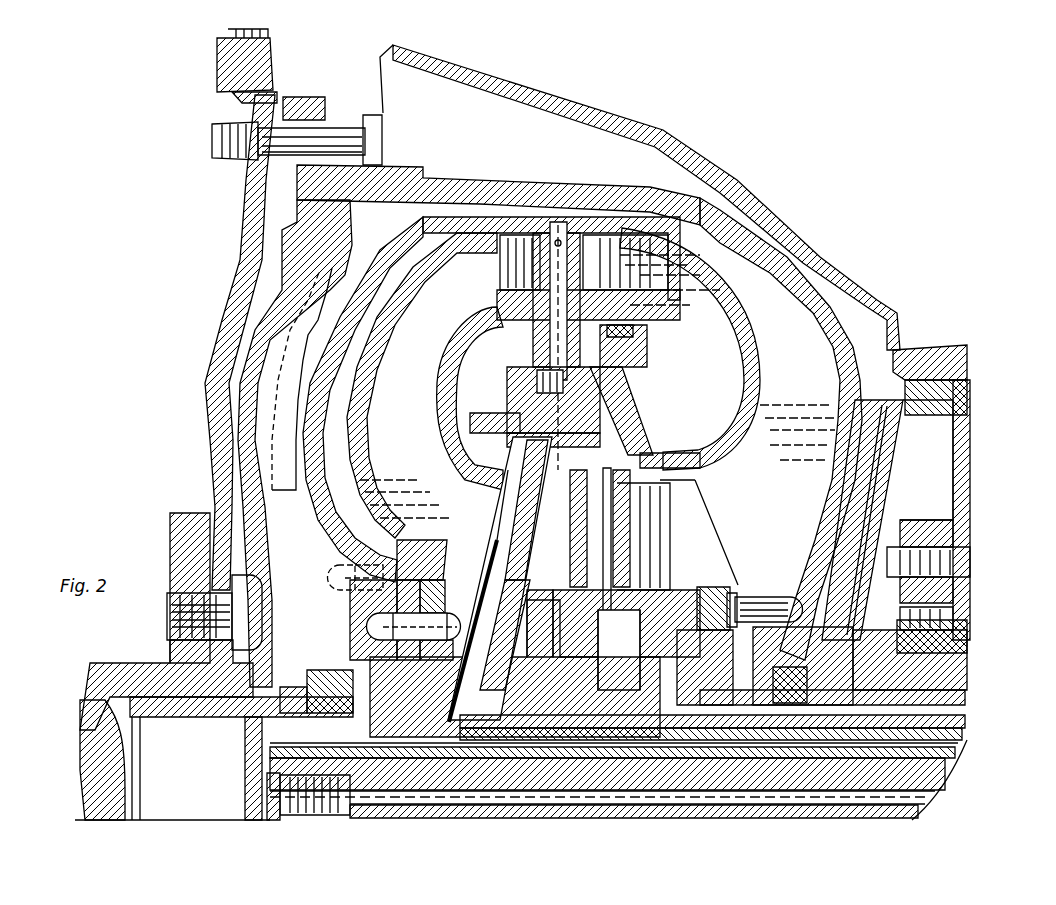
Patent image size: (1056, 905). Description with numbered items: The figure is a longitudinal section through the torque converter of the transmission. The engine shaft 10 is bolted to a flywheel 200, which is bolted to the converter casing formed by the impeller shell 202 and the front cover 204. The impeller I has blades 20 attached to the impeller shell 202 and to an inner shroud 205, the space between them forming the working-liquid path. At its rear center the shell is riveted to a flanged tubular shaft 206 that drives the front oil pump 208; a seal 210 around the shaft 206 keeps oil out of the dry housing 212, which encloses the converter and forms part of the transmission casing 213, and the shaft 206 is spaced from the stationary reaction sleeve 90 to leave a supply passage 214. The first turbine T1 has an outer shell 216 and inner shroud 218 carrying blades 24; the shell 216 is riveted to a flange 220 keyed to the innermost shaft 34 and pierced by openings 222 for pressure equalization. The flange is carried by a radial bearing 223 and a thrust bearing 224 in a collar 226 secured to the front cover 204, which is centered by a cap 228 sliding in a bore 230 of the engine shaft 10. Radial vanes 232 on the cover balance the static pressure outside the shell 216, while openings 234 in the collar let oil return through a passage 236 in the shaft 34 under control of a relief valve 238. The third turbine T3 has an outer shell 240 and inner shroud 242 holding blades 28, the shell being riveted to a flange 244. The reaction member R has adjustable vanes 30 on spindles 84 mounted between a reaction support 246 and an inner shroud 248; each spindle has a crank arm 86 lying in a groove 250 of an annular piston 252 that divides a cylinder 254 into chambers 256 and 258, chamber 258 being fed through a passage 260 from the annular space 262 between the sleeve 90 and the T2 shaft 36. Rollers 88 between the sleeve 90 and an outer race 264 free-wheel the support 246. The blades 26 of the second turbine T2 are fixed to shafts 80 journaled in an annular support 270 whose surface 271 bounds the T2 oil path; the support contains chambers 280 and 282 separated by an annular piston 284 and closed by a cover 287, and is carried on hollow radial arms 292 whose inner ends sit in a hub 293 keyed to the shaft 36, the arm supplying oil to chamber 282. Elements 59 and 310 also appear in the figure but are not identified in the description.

The engine shaft 10 is at (100, 668).
The impeller blades 20 is at (840, 366).
The first turbine blades 24 is at (666, 306).
The second turbine blades 26 is at (562, 240).
The third turbine blades 28 is at (393, 505).
The adjustable stator vanes 30 is at (665, 542).
The innermost shaft 34 is at (940, 775).
The second turbine shaft 36 is at (963, 735).
The shaft 59 is at (462, 774).
The blade shaft 80 is at (550, 320).
The spindles 84 is at (527, 535).
The crank arm 86 is at (530, 630).
The sprags or rollers 88 is at (745, 680).
The stationary reaction sleeve 90 is at (960, 695).
The flywheel 200 is at (257, 205).
The impeller shell 202 is at (622, 188).
The front cover 204 is at (335, 236).
The impeller inner shroud 205 is at (750, 362).
The flanged tubular shaft 206 is at (966, 655).
The front oil pump 208 is at (970, 640).
The seal 210 is at (792, 608).
The dry housing 212 is at (850, 270).
The transmission casing 213 is at (948, 350).
The oil supply passage 214 is at (960, 680).
The first turbine outer shell 216 is at (415, 238).
The first turbine inner shroud 218 is at (630, 380).
The flange 220 is at (345, 582).
The openings 222 is at (357, 604).
The radial bearing 223 is at (255, 735).
The thrust bearing 224 is at (342, 700).
The collar 226 is at (318, 660).
The cap 228 is at (100, 783).
The bore 230 is at (136, 685).
The radial vanes 232 is at (290, 330).
The collar openings 234 is at (307, 690).
The return passage 236 is at (918, 806).
The relief valve 238 is at (275, 800).
The third turbine outer shell 240 is at (380, 320).
The third turbine inner shroud 242 is at (456, 357).
The third turbine flange 244 is at (350, 678).
The reaction support 246 is at (662, 570).
The stator inner shroud 248 is at (680, 490).
The annular groove 250 is at (638, 652).
The annular piston 252 is at (688, 612).
The cylinder 254 is at (735, 572).
The pressure chamber 256 is at (700, 585).
The pressure chamber 258 is at (520, 650).
The passage 260 is at (630, 690).
The annular space 262 is at (966, 720).
The outer race 264 is at (680, 625).
The annular support 270 is at (535, 345).
The surface 271 is at (505, 298).
The pressure chamber 280 is at (592, 384).
The pressure chamber 282 is at (490, 393).
The annular piston 284 is at (465, 420).
The annular cover 287 is at (642, 432).
The hollow radial arm 292 is at (528, 560).
The hub 293 is at (518, 495).
The sleeve 310 is at (957, 752).
The first turbine T1 is at (624, 222).
The second turbine T2 is at (475, 337).
The third turbine T3 is at (352, 471).
The impeller I is at (746, 387).
The reaction member R is at (652, 472).